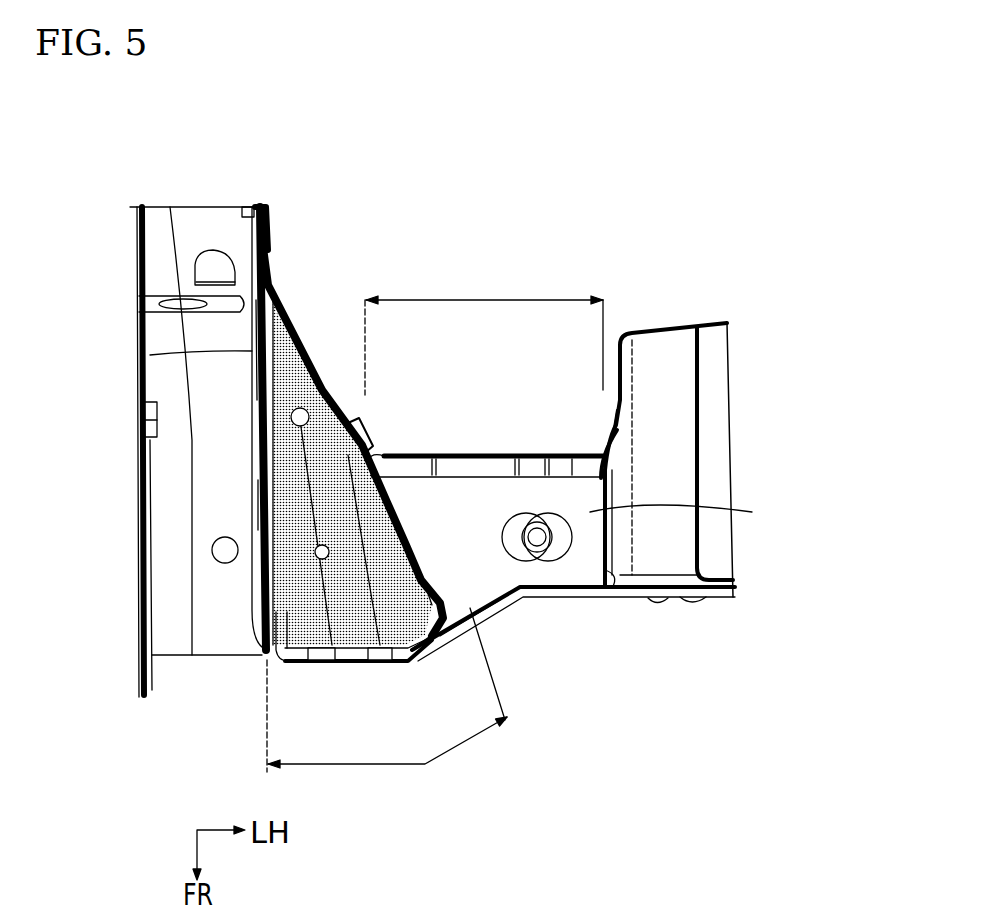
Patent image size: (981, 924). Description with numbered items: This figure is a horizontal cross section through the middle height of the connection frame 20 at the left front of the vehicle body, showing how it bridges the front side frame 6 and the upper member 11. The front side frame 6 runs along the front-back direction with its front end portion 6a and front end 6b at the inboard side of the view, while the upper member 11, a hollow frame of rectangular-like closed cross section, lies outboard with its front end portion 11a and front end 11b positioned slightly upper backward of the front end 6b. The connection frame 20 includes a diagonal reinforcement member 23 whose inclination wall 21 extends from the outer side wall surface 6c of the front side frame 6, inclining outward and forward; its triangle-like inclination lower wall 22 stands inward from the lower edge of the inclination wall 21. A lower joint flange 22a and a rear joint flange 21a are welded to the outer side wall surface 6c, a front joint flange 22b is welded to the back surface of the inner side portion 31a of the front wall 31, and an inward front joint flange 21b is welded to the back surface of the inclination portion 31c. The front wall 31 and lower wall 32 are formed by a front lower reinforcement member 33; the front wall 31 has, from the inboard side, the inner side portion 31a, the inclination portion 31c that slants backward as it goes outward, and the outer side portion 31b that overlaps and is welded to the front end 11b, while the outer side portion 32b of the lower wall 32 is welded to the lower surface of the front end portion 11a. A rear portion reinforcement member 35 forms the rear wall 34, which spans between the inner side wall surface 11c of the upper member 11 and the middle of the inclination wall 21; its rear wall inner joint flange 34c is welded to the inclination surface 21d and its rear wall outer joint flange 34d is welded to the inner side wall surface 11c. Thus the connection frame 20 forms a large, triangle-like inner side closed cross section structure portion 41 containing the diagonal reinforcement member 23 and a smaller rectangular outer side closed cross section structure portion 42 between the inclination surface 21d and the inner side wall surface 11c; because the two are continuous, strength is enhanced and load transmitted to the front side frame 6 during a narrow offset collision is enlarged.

The front side frame 6 is at (137, 390).
The front end portion of front side frame 6a is at (160, 452).
The front end of front side frame 6b is at (205, 658).
The outer side wall surface 6c is at (258, 333).
The upper member 11 is at (668, 332).
The front end portion of upper member 11a is at (677, 429).
The front end of upper member 11b is at (655, 599).
The inner side wall surface 11c is at (618, 410).
The connection frame 20 is at (543, 626).
The inclination wall 21 is at (352, 423).
The rear joint flange 21a is at (265, 250).
The inward front joint flange 21b is at (432, 633).
The inclination surface 21d is at (318, 380).
The inclination lower wall 22 is at (290, 472).
The lower joint flange 22a is at (258, 505).
The front joint flange 22b is at (353, 661).
The diagonal reinforcement member 23 is at (307, 353).
The front wall 31 is at (573, 663).
The inner side portion of front wall 31a is at (308, 663).
The outer side portion of front wall 31b is at (688, 602).
The inclination portion of front wall 31c is at (477, 613).
The lower wall 32 is at (671, 508).
The outer side portion of lower wall 32b is at (695, 522).
The front lower reinforcement member 33 is at (595, 608).
The rear wall 34 is at (485, 422).
The rear wall inner joint flange 34c is at (370, 444).
The rear wall outer joint flange 34d is at (607, 443).
The rear portion reinforcement member 35 is at (455, 455).
The inner side closed cross section structure portion 41 is at (393, 767).
The outer side closed cross section structure portion 42 is at (473, 300).